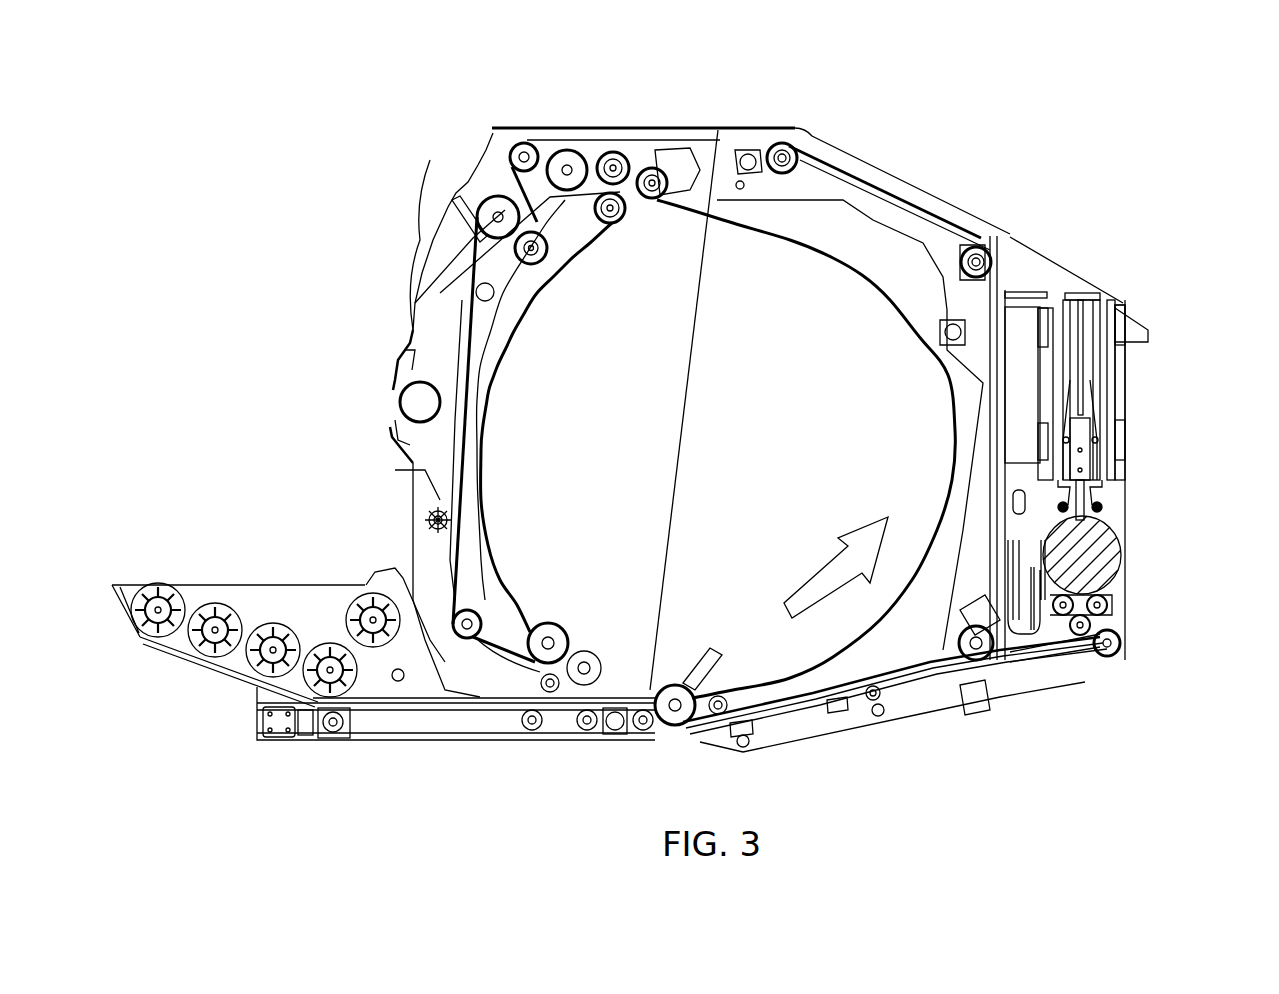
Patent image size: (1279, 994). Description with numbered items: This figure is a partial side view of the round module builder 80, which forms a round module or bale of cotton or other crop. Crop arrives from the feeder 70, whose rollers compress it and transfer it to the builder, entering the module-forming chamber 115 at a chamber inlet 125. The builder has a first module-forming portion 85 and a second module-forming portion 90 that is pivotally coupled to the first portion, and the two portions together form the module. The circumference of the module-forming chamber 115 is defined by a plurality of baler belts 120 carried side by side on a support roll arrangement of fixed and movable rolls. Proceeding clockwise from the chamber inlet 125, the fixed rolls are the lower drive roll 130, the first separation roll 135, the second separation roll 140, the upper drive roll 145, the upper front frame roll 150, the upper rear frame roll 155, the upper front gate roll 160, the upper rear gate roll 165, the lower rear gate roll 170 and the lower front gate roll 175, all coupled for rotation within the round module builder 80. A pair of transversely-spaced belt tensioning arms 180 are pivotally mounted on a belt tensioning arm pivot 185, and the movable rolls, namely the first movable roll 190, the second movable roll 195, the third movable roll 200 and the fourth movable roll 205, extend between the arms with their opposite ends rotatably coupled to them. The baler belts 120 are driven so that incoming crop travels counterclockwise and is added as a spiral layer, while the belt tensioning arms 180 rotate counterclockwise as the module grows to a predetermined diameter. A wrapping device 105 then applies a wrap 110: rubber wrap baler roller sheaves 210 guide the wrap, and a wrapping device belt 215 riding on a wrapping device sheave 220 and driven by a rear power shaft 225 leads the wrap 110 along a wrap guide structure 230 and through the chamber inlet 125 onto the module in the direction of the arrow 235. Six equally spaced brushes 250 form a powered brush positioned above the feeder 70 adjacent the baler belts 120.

The feeder 70 is at (205, 558).
The round module builder 80 is at (1062, 102).
The first module-forming portion 85 is at (427, 486).
The second module-forming portion 90 is at (1050, 268).
The wrapping device 105 is at (1147, 530).
The wrap 110 is at (1094, 563).
The module-forming chamber 115 is at (797, 421).
The baler belts 120 is at (833, 252).
The chamber inlet 125 is at (597, 750).
The lower drive roll 130 is at (562, 626).
The first separation roll 135 is at (520, 590).
The second separation roll 140 is at (480, 558).
The upper drive roll 145 is at (482, 194).
The upper front frame roll 150 is at (522, 143).
The upper rear frame roll 155 is at (568, 150).
The upper front gate roll 160 is at (782, 143).
The upper rear gate roll 165 is at (976, 248).
The lower rear gate roll 170 is at (960, 638).
The lower front gate roll 175 is at (675, 727).
The belt tensioning arms 180 is at (445, 320).
The belt tensioning arm pivot 185 is at (408, 400).
The first movable roll 190 is at (537, 265).
The second movable roll 195 is at (612, 225).
The third movable roll 200 is at (614, 152).
The fourth movable roll 205 is at (656, 198).
The rubber wrap baler roller sheaves 210 is at (1097, 618).
The wrapping device belt 215 is at (1108, 658).
The wrapping device sheave 220 is at (874, 710).
The rear power shaft 225 is at (1118, 648).
The wrap guide structure 230 is at (895, 713).
The arrow 235 is at (833, 581).
The brushes 250 is at (433, 538).